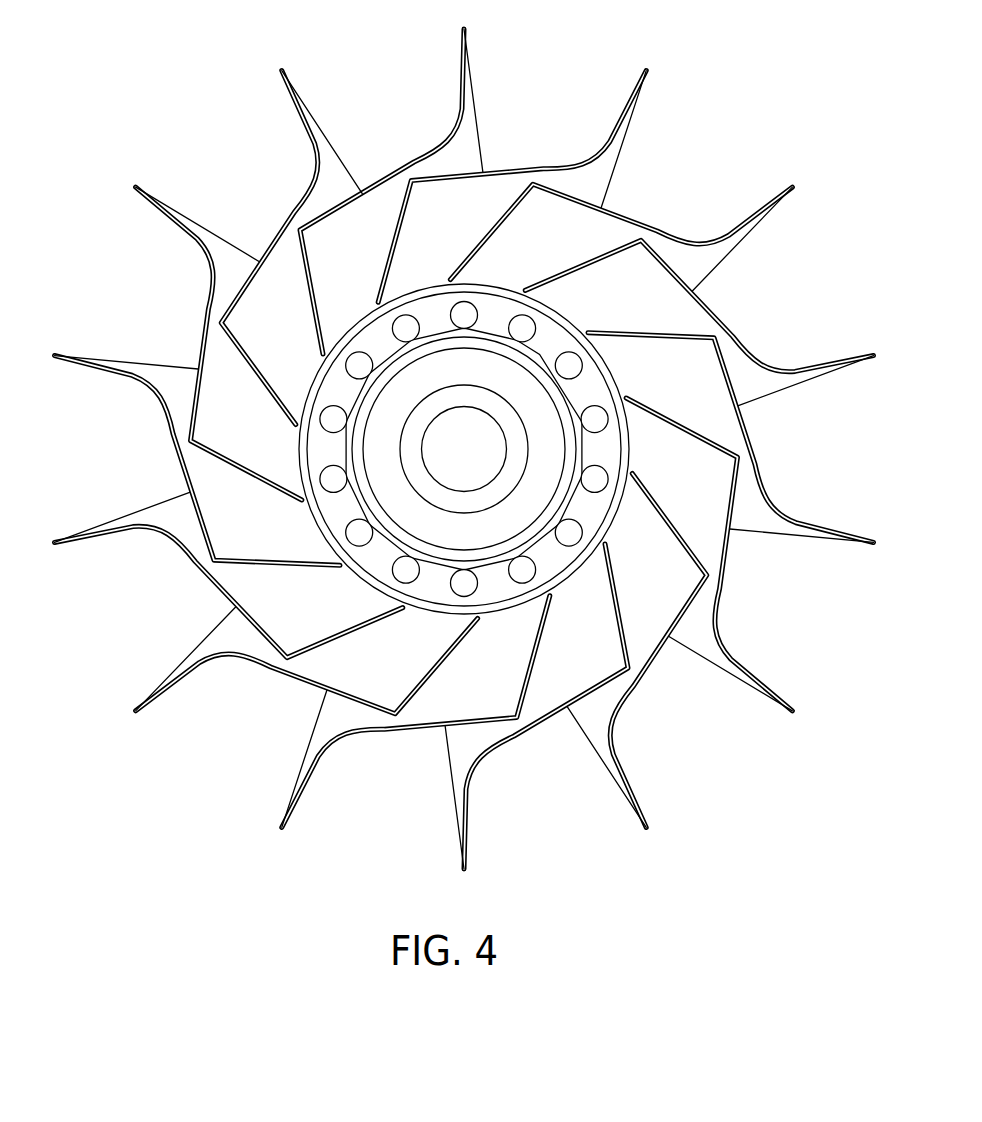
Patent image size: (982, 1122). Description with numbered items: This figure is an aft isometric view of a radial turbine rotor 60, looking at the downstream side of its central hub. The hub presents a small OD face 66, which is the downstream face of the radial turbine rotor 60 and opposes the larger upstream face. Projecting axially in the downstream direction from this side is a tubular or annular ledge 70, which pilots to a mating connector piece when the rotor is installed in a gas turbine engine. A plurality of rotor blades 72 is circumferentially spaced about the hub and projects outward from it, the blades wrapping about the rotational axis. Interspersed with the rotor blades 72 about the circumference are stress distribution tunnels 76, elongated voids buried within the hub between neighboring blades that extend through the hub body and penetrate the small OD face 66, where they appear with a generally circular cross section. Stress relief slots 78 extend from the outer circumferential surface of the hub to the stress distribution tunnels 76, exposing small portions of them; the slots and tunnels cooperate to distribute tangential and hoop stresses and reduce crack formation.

The radial turbine rotor 60 is at (175, 142).
The small OD face 66 is at (463, 441).
The tubular or annular ledge 70 is at (563, 403).
The rotor blades 72 is at (323, 143).
The stress distribution tunnels 76 is at (452, 332).
The stress relief slots 78 is at (352, 353).